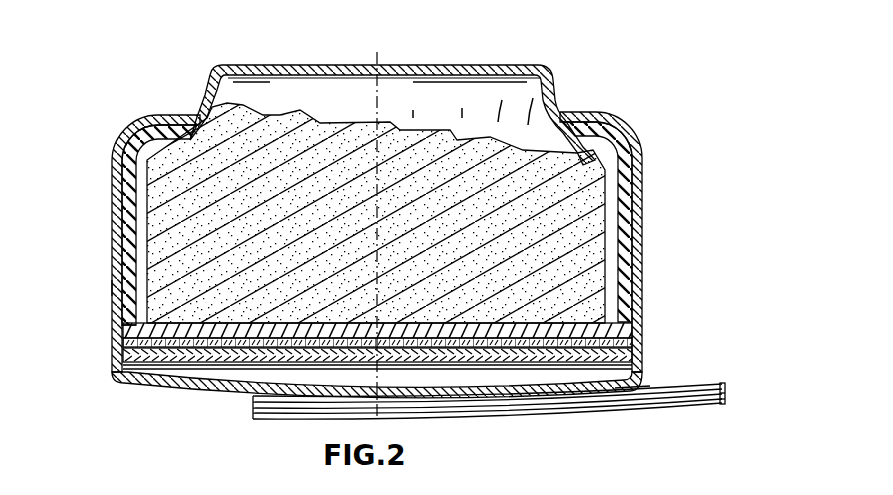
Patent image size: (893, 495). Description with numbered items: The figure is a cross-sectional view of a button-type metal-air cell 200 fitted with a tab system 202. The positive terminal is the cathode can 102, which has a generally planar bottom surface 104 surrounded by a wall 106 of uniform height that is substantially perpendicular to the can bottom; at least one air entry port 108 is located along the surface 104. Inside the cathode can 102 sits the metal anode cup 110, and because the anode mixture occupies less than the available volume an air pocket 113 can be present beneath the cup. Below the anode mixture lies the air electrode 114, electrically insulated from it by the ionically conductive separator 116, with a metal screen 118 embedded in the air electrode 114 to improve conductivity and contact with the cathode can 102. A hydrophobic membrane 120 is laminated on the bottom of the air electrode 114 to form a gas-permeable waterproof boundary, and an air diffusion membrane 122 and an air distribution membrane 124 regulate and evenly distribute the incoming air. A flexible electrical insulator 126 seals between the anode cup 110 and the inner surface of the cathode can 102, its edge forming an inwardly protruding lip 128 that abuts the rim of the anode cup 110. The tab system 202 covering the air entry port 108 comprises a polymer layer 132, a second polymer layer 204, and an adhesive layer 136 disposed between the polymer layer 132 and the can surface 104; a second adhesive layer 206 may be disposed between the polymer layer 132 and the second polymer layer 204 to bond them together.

The metal-air cell 200 is at (150, 67).
The cathode can 102 is at (118, 142).
The surface 104 is at (190, 392).
The wall 106 is at (640, 206).
The air entry port 108 is at (362, 395).
The anode cup 110 is at (287, 65).
The air pocket 113 is at (525, 90).
The air electrode 114 is at (116, 350).
The ionically conductive separator 116 is at (117, 328).
The metal screen 118 is at (124, 336).
The hydrophobic membrane 120 is at (118, 360).
The air diffusion membrane 122 is at (110, 383).
The air distribution membrane 124 is at (130, 388).
The electrical insulator 126 is at (130, 192).
The inwardly protruding lip 128 is at (110, 287).
The polymer layer 132 is at (721, 383).
The adhesive layer 136 is at (640, 390).
The tab system 202 is at (660, 440).
The second polymer layer 204 is at (720, 402).
The second adhesive layer 206 is at (726, 396).